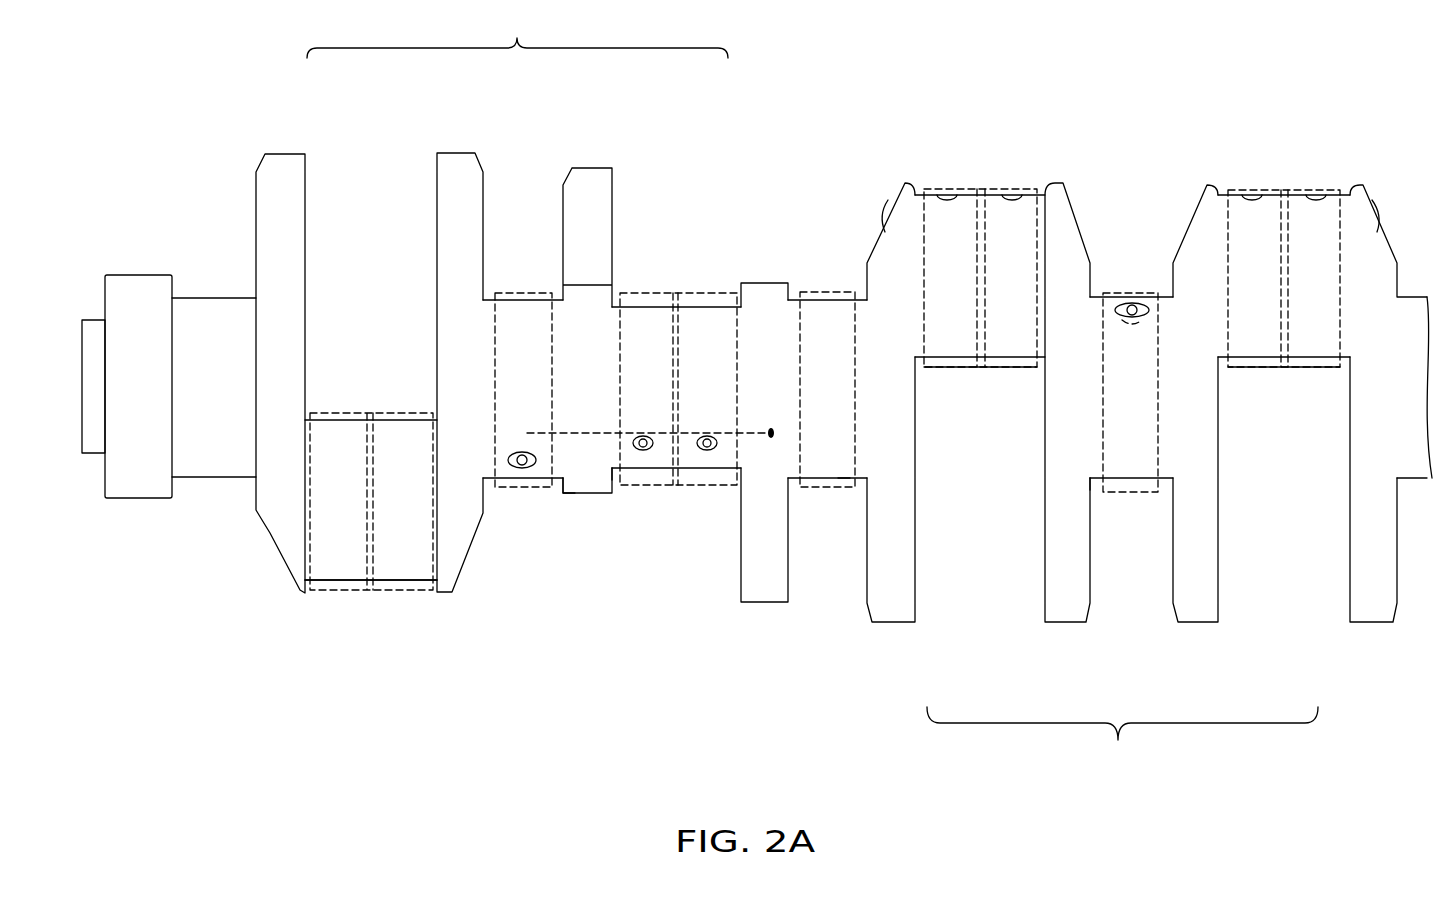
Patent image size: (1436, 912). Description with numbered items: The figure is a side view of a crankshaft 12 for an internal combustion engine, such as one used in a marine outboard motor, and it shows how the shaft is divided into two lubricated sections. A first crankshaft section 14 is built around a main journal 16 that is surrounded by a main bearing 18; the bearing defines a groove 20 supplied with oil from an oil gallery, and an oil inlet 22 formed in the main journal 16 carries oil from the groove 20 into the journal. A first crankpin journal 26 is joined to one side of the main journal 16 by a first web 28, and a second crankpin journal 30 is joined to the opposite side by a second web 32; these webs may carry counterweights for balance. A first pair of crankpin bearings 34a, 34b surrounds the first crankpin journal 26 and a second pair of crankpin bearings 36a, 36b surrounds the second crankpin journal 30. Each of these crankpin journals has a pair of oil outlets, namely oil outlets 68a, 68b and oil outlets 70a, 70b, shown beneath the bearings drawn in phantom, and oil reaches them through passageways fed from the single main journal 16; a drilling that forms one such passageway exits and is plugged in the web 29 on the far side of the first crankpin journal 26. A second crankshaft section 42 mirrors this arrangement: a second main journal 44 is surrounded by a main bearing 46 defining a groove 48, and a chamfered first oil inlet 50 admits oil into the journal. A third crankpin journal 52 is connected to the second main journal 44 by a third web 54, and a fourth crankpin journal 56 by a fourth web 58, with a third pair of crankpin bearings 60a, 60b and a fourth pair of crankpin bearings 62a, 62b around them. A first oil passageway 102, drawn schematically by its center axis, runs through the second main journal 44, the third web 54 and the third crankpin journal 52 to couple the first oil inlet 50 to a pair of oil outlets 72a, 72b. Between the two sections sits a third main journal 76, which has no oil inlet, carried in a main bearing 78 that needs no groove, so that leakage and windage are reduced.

The crankshaft 12 is at (213, 286).
The first crankshaft section 14 is at (1122, 740).
The main journal 16 is at (1098, 480).
The main bearing 18 is at (1120, 295).
The groove 20 is at (1152, 295).
The oil inlet 22 is at (1133, 300).
The first crankpin journal 26 is at (1297, 367).
The first web 28 is at (1205, 187).
The web 29 is at (1360, 190).
The second crankpin journal 30 is at (978, 368).
The second web 32 is at (1060, 185).
The crankpin bearing 34a is at (1322, 190).
The crankpin bearing 34b is at (1275, 190).
The crankpin bearing 36a is at (1002, 190).
The crankpin bearing 36b is at (960, 190).
The second crankshaft section 42 is at (517, 29).
The second main journal 44 is at (488, 297).
The main bearing 46 is at (538, 293).
The groove 48 is at (560, 492).
The first oil inlet 50 is at (510, 468).
The third crankpin journal 52 is at (620, 480).
The third web 54 is at (593, 495).
The fourth crankpin journal 56 is at (370, 582).
The fourth web 58 is at (455, 580).
The crankpin bearing 60a is at (722, 293).
The crankpin bearing 60b is at (647, 293).
The crankpin bearing 62a is at (408, 413).
The crankpin bearing 62b is at (345, 413).
The oil outlet 68a is at (1318, 195).
The oil outlet 68b is at (1245, 190).
The oil outlet 70a is at (1015, 195).
The oil outlet 70b is at (923, 190).
The oil outlet 72a is at (708, 450).
The oil outlet 72b is at (651, 447).
The third main journal 76 is at (837, 298).
The main bearing 78 is at (838, 487).
The first oil passageway 102 is at (627, 432).